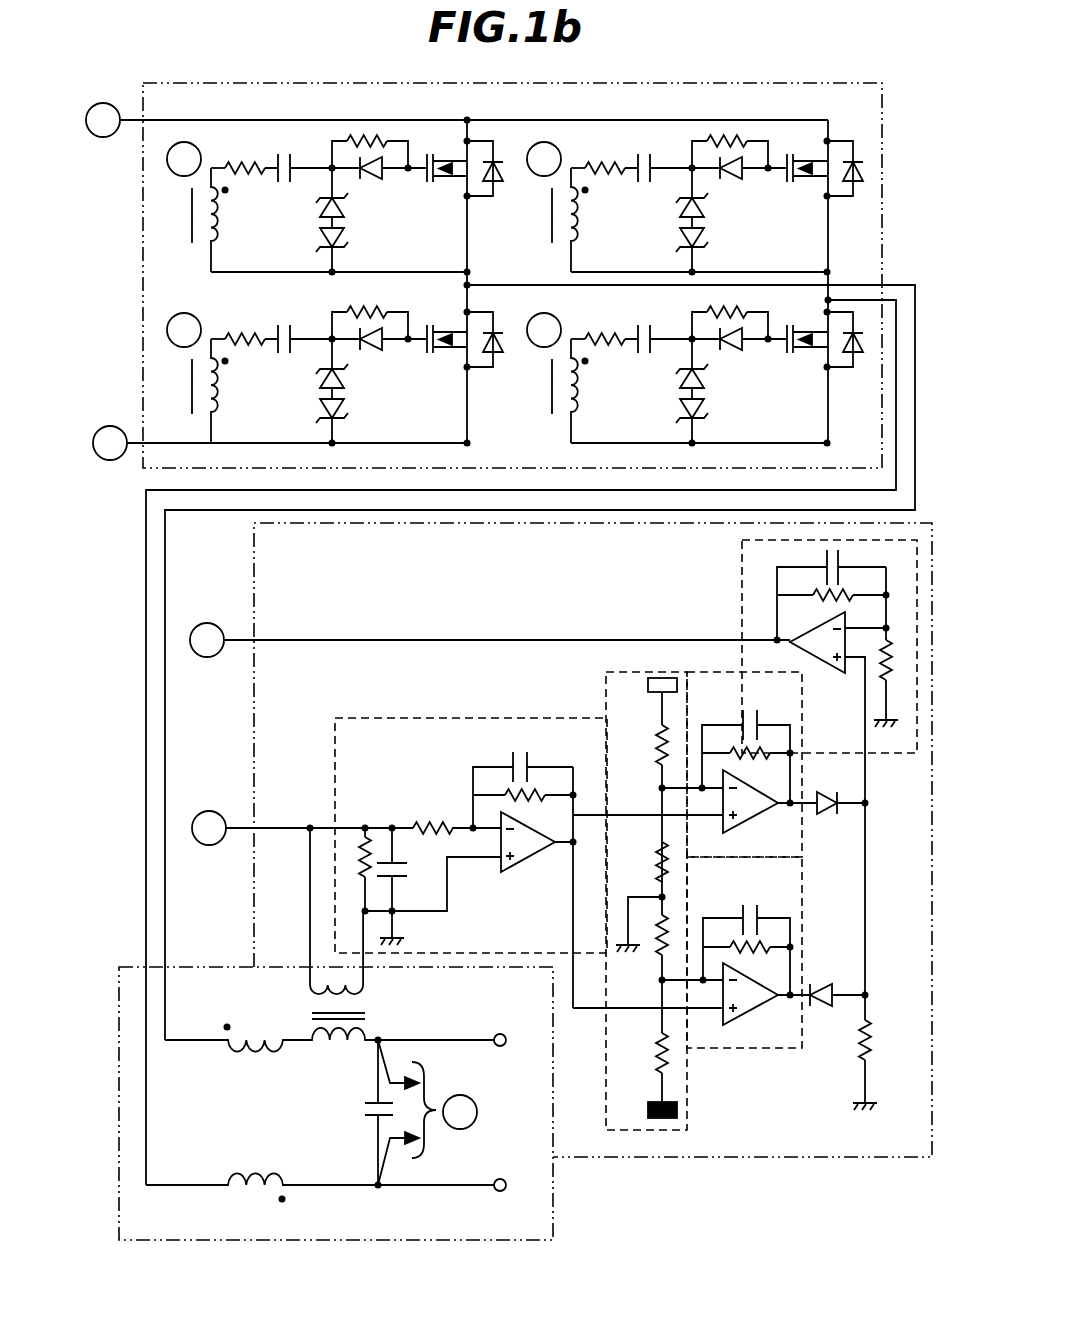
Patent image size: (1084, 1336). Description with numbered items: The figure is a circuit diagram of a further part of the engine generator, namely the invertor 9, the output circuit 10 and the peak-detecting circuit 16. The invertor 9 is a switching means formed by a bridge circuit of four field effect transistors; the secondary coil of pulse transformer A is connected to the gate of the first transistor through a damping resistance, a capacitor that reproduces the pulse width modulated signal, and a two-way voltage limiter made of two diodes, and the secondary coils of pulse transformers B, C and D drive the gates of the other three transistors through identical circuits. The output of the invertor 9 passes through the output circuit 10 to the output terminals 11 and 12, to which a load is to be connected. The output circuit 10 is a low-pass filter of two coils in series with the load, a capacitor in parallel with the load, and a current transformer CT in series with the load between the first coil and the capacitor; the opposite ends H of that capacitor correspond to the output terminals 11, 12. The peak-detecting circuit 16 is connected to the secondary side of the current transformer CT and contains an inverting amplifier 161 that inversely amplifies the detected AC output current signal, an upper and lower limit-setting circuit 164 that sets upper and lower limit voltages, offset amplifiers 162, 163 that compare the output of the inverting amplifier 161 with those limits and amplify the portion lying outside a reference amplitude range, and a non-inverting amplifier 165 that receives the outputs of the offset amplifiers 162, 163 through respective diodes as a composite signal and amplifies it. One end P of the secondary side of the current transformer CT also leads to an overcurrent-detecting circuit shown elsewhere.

The invertor 9 is at (143, 250).
The output circuit 10 is at (557, 1183).
The output terminal 11 is at (465, 1040).
The output terminal 12 is at (465, 1185).
The peak-detecting circuit 16 is at (763, 1170).
The inverting amplifier 161 is at (435, 718).
The offset amplifier 162 is at (805, 845).
The offset amplifier 163 is at (805, 912).
The upper and lower limit-setting circuit 164 is at (606, 695).
The non-inverting amplifier 165 is at (735, 590).